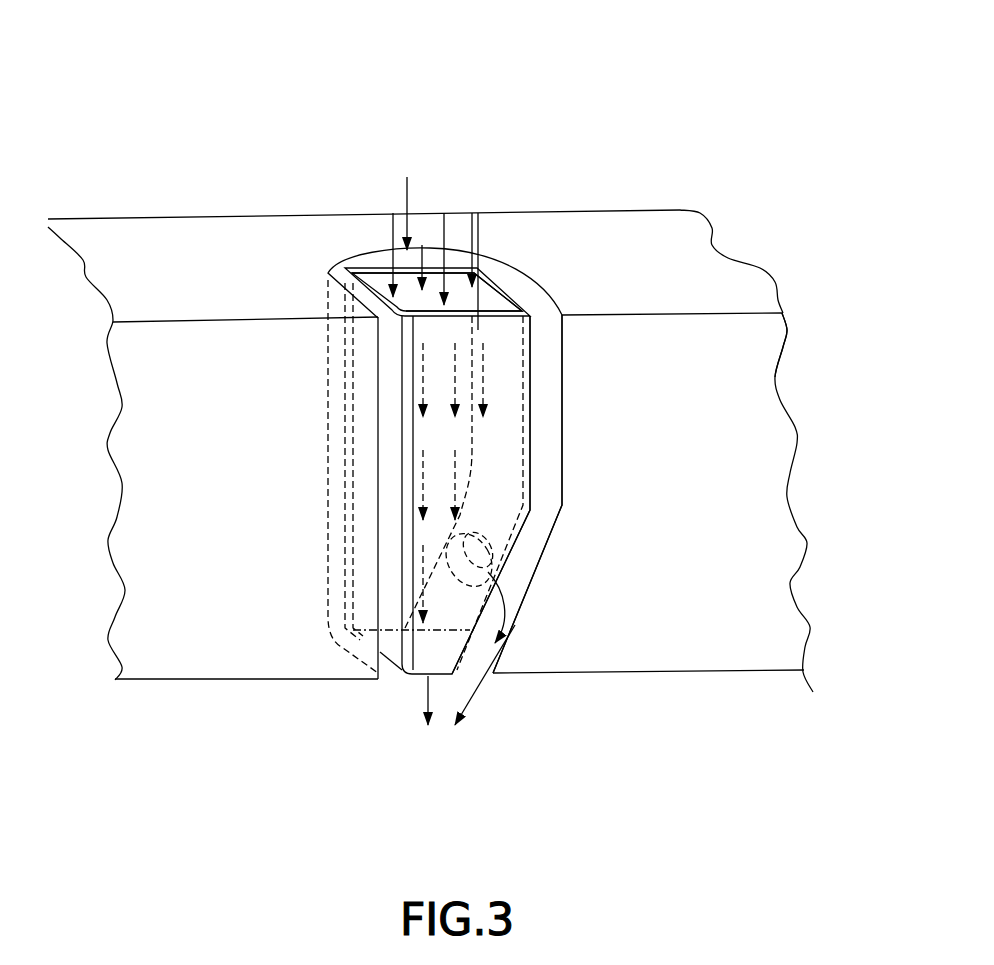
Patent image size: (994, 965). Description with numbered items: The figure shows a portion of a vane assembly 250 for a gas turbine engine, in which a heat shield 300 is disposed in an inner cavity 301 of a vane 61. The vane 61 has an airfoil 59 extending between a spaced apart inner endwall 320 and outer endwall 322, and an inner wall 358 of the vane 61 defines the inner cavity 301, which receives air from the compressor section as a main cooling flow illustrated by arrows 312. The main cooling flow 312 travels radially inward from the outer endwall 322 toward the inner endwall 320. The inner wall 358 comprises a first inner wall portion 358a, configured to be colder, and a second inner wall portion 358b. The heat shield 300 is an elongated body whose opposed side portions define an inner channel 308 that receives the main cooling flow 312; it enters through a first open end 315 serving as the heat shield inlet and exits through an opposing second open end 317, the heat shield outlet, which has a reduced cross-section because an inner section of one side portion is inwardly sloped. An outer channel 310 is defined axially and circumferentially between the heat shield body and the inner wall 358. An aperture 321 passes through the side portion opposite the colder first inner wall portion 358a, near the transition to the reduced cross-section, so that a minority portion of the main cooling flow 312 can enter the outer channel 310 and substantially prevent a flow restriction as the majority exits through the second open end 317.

The vane assembly 250 is at (675, 75).
The vane 61 is at (648, 228).
The airfoil 59 is at (714, 272).
The outer endwall 322 is at (783, 313).
The inner endwall 320 is at (809, 690).
The heat shield 300 is at (365, 245).
The inner cavity 301 is at (407, 177).
The main cooling flow 312 is at (377, 222).
The inner wall 358 is at (337, 277).
The first inner wall portion 358a is at (553, 482).
The second inner wall portion 358b is at (377, 492).
The first open end 315 is at (507, 293).
The outer channel 310 is at (547, 402).
The inner channel 308 is at (456, 445).
The aperture 321 is at (483, 545).
The second open end 317 is at (445, 676).